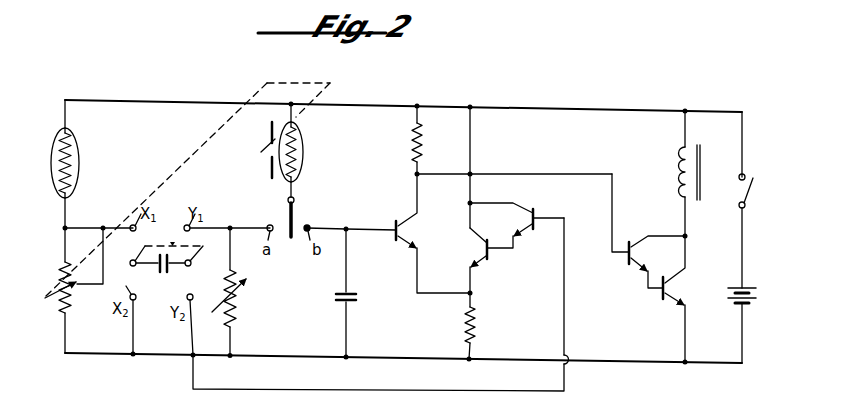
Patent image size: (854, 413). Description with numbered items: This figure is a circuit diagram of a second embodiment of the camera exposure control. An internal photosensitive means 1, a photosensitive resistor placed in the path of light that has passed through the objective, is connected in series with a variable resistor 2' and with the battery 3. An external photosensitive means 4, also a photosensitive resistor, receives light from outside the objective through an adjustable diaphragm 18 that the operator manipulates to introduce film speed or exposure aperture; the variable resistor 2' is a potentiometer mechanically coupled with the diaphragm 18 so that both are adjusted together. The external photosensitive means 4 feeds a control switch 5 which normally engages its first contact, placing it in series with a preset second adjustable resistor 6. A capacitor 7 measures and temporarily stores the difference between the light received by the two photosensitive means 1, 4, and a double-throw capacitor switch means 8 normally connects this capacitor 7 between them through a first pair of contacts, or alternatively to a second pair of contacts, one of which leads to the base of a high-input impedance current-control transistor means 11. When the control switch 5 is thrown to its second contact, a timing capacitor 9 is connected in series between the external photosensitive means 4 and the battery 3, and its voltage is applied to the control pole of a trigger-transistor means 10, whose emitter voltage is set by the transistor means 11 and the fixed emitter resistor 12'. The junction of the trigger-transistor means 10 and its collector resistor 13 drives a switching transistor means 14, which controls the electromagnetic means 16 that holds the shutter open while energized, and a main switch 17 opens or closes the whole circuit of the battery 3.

The internal photosensitive means 1 is at (77, 163).
The variable resistor 2' is at (74, 273).
The battery 3 is at (694, 309).
The external photosensitive means 4 is at (302, 150).
The control switch 5 is at (293, 240).
The second adjustable resistor 6 is at (240, 297).
The capacitor 7 is at (165, 275).
The capacitor switch means 8 is at (160, 254).
The timing capacitor 9 is at (343, 306).
The trigger-transistor means 10 is at (426, 233).
The current-control transistor means 11 is at (517, 251).
The fixed resistor 12' is at (489, 326).
The collector resistor 13 is at (399, 140).
The switching transistor means 14 is at (644, 285).
The electromagnetic means 16 is at (673, 173).
The main switch 17 is at (730, 192).
The diaphragm 18 is at (268, 167).